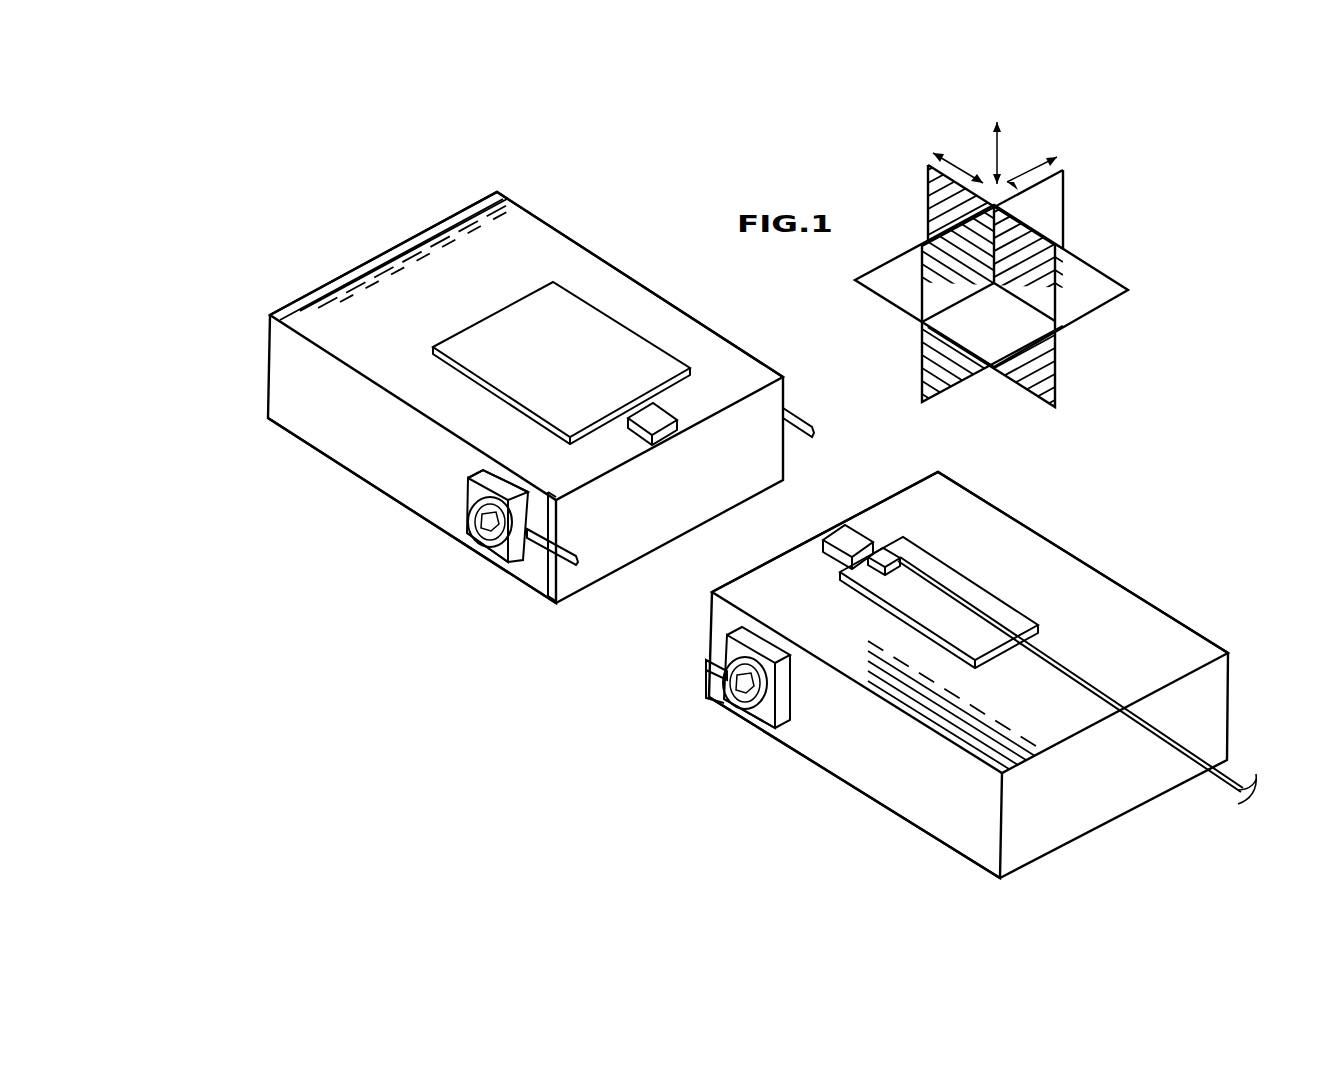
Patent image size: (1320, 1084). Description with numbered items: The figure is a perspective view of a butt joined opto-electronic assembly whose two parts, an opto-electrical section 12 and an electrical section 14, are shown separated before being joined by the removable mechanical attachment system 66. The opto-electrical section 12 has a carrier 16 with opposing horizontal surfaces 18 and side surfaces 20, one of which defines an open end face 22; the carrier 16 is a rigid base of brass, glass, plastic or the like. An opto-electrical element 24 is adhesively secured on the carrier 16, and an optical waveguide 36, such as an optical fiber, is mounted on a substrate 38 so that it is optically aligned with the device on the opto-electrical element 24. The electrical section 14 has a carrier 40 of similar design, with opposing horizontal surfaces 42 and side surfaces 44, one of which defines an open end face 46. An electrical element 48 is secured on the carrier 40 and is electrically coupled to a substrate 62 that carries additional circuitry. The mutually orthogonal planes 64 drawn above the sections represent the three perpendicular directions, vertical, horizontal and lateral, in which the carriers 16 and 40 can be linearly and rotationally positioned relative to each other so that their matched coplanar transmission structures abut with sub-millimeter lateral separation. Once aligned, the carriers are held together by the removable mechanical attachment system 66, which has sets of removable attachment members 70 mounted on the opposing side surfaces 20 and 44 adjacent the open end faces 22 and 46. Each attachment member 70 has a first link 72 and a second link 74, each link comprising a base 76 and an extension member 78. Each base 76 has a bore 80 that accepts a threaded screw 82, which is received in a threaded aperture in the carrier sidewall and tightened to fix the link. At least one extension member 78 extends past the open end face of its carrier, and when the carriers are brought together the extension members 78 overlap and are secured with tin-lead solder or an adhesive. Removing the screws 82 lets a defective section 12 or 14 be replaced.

The opto-electrical section 12 is at (931, 675).
The electrical section 14 is at (504, 381).
The carrier 16 is at (1070, 555).
The horizontal surfaces 18 is at (993, 528).
The side surfaces 20 is at (1170, 613).
The open end face 22 is at (793, 547).
The opto-electrical element 24 is at (845, 535).
The optical waveguide 36 is at (1068, 675).
The substrate 38 is at (995, 612).
The carrier 40 is at (605, 260).
The horizontal surfaces 42 is at (540, 221).
The side surfaces 44 is at (452, 217).
The open end face 46 is at (677, 505).
The electrical element 48 is at (650, 418).
The substrate 62 is at (515, 325).
The mutually orthogonal planes 64 is at (1065, 200).
The removable mechanical attachment system 66 is at (645, 596).
The removable attachment members 70 is at (468, 546).
The first link 72 is at (540, 575).
The second link 74 is at (760, 718).
The base 76 is at (505, 552).
The extension member 78 is at (574, 585).
The bore 80 is at (506, 480).
The threaded screw 82 is at (470, 512).